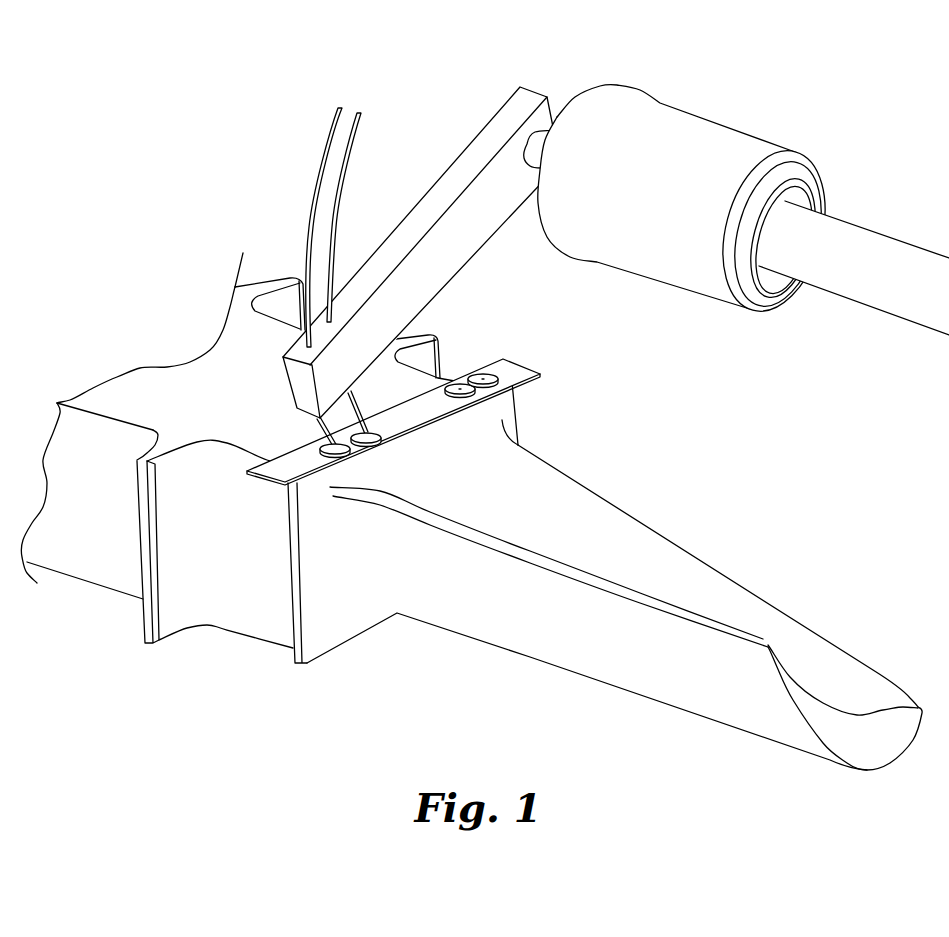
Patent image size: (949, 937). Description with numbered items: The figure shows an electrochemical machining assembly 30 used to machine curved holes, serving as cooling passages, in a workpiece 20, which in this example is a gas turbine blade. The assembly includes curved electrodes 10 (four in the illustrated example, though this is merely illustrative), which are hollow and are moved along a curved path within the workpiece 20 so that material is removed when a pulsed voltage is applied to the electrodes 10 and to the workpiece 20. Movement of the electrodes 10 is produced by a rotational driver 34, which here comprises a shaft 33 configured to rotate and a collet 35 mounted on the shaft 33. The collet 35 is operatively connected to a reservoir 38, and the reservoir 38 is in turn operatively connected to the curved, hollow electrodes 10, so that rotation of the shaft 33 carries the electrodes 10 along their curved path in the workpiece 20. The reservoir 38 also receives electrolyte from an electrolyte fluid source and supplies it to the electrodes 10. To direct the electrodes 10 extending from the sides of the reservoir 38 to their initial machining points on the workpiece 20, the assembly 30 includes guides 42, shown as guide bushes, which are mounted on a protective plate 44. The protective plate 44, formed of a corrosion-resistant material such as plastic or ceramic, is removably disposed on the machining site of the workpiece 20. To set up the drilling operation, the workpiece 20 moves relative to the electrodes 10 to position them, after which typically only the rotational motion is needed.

The curved electrode 10 is at (327, 157).
The workpiece 20 is at (258, 602).
The electrochemical machining assembly 30 is at (391, 47).
The shaft 33 is at (854, 253).
The rotational driver 34 is at (743, 193).
The collet 35 is at (670, 127).
The reservoir 38 is at (505, 123).
The guide 42 is at (530, 373).
The protective plate 44 is at (307, 495).